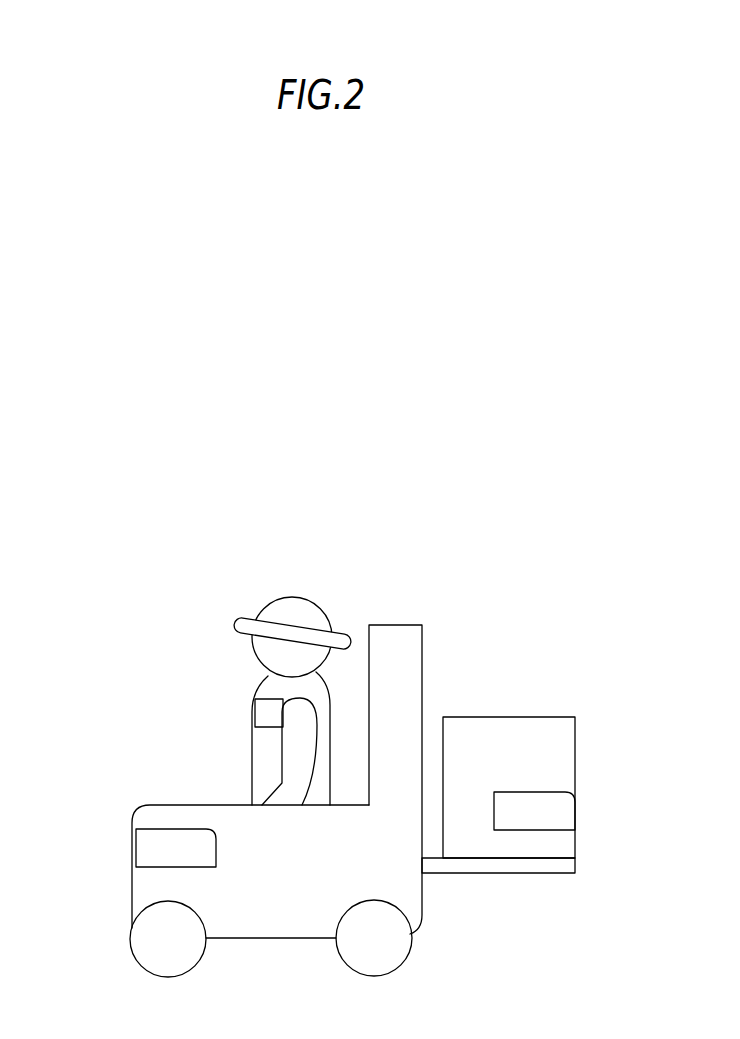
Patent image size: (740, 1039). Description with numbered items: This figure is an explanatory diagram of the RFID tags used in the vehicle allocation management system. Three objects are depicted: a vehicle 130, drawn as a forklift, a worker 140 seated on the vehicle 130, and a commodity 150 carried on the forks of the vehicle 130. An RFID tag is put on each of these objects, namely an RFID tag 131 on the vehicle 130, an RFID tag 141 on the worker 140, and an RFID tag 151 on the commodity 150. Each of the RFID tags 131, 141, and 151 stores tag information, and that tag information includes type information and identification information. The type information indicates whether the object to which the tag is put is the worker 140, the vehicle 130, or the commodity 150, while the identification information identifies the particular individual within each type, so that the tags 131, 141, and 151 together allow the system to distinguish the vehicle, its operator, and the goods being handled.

The vehicle 130 is at (130, 838).
The RFID tag 131 is at (150, 858).
The worker 140 is at (297, 605).
The RFID tag 141 is at (255, 713).
The commodity 150 is at (573, 740).
The RFID tag 151 is at (562, 818).